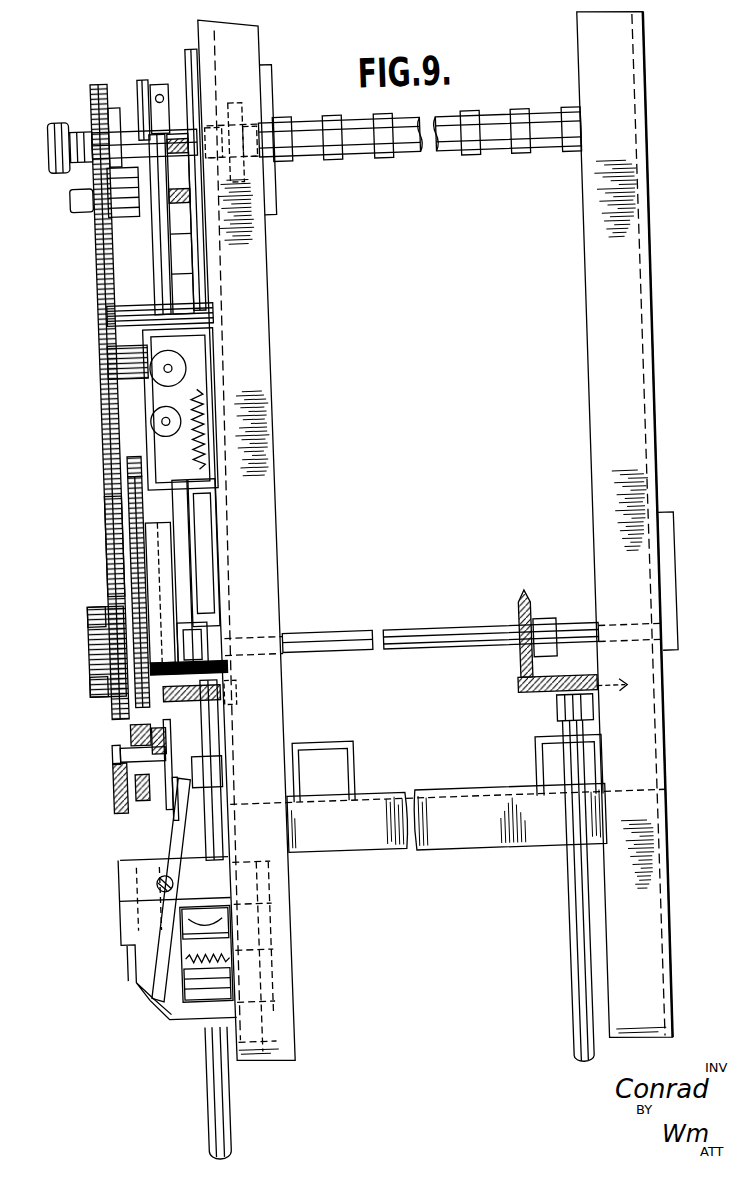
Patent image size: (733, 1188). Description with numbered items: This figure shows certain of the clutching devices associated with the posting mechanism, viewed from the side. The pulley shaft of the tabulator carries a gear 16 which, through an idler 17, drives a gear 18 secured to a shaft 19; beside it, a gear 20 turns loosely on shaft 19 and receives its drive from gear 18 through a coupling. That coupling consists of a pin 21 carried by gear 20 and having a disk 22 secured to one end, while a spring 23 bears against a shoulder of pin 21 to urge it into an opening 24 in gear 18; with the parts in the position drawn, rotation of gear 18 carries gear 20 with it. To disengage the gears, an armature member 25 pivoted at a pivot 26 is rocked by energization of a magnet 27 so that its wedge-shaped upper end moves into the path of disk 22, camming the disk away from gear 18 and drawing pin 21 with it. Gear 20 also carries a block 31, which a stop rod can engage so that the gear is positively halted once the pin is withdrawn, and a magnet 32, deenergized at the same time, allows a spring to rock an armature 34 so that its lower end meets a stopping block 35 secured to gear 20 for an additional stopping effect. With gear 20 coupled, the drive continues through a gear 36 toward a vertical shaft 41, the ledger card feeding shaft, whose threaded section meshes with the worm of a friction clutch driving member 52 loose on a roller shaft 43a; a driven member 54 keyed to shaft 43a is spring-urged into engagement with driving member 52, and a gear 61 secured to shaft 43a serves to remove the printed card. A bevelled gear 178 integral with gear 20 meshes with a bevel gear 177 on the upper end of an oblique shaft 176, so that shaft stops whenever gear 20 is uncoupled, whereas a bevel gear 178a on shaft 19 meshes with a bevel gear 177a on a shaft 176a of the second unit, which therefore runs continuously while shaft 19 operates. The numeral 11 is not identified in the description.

The drive shaft 11 is at (76, 216).
The gear 16 is at (85, 95).
The idler 17 is at (91, 359).
The gear 18 is at (86, 536).
The shaft 19 is at (74, 660).
The gear 20 is at (114, 553).
The pin 21 is at (92, 759).
The disk 22 is at (115, 720).
The spring 23 is at (96, 769).
The opening 24 is at (87, 752).
The armature member 25 is at (144, 841).
The pivot 26 is at (129, 891).
The magnet 27 is at (169, 994).
The block 31 is at (130, 794).
The magnet 32 is at (180, 370).
The armature 34 is at (144, 556).
The stopping block 35 is at (206, 625).
The gear 36 is at (117, 462).
The vertical shaft 41 is at (188, 58).
The roller shaft 43a is at (169, 133).
The driving member 52 is at (157, 93).
The driven member 54 is at (137, 87).
The gear 61 is at (228, 114).
The oblique shaft 176 is at (175, 1095).
The shaft 176a is at (554, 961).
The bevel gear 177 is at (206, 701).
The bevel gear 177a is at (526, 714).
The bevelled gear 178 is at (143, 686).
The bevel gear 178a is at (499, 678).